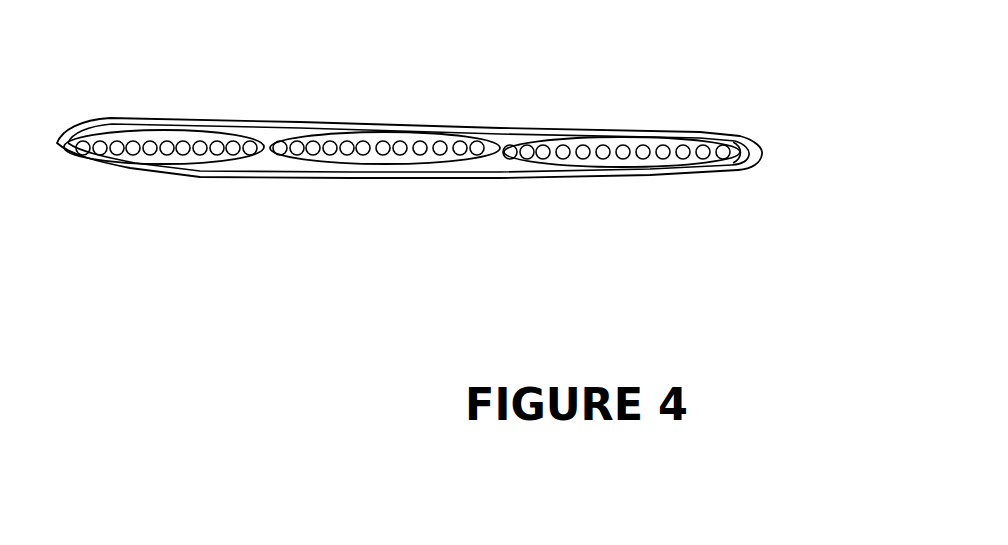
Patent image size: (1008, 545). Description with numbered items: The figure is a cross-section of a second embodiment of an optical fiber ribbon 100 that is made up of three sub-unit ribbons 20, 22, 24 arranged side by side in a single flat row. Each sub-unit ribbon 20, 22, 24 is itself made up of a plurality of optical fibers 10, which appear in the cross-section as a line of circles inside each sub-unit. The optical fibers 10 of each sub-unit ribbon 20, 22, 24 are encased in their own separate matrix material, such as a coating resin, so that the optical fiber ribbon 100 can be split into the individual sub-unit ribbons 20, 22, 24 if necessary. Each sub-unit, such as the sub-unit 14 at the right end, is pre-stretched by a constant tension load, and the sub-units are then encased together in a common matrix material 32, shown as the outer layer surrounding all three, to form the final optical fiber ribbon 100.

The optical fiber ribbon 100 is at (758, 105).
The optical fibers 10 is at (188, 137).
The sub-unit 14 is at (712, 188).
The sub-unit ribbon 20 is at (207, 185).
The sub-unit ribbon 22 is at (388, 187).
The sub-unit ribbon 24 is at (556, 142).
The common matrix material 32 is at (557, 178).